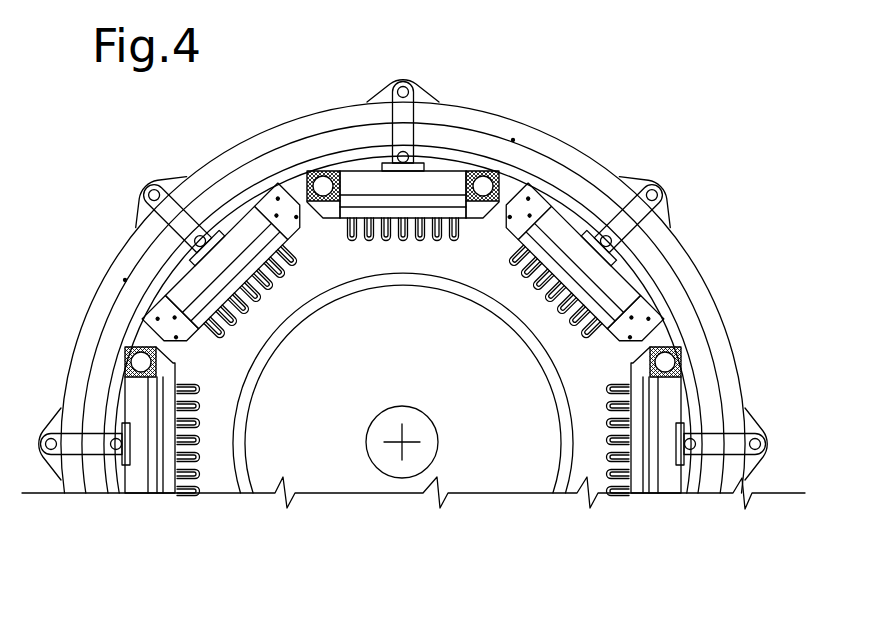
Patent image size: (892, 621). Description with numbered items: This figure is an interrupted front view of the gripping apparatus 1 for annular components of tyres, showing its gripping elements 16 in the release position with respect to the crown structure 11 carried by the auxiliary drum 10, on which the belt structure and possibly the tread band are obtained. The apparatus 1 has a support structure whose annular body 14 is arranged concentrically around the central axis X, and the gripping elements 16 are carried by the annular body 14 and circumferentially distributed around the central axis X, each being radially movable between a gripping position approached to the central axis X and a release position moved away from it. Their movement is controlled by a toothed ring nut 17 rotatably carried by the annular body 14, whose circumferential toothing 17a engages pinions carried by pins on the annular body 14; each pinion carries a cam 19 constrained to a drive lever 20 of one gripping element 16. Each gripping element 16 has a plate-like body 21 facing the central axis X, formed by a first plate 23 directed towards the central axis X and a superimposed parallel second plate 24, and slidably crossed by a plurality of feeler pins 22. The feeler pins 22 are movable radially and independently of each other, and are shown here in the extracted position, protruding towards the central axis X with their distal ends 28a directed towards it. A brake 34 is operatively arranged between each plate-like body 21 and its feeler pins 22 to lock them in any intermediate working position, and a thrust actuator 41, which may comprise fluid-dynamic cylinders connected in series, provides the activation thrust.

The gripping apparatus 1 is at (622, 96).
The auxiliary drum 10 is at (522, 477).
The crown structure 11 is at (245, 442).
The annular body 14 is at (90, 331).
The gripping elements 16 is at (354, 162).
The toothed ring nut 17 is at (503, 152).
The circumferential toothing 17a is at (443, 128).
The cam 19 is at (748, 422).
The drive lever 20 is at (640, 209).
The plate-like body 21 is at (163, 482).
The feeler pins 22 is at (346, 226).
The first plate 23 is at (453, 213).
The second plate 24 is at (437, 183).
The distal end 28a is at (448, 234).
The brake 34 is at (165, 400).
The thrust actuator 41 is at (703, 353).
The central axis X is at (402, 446).